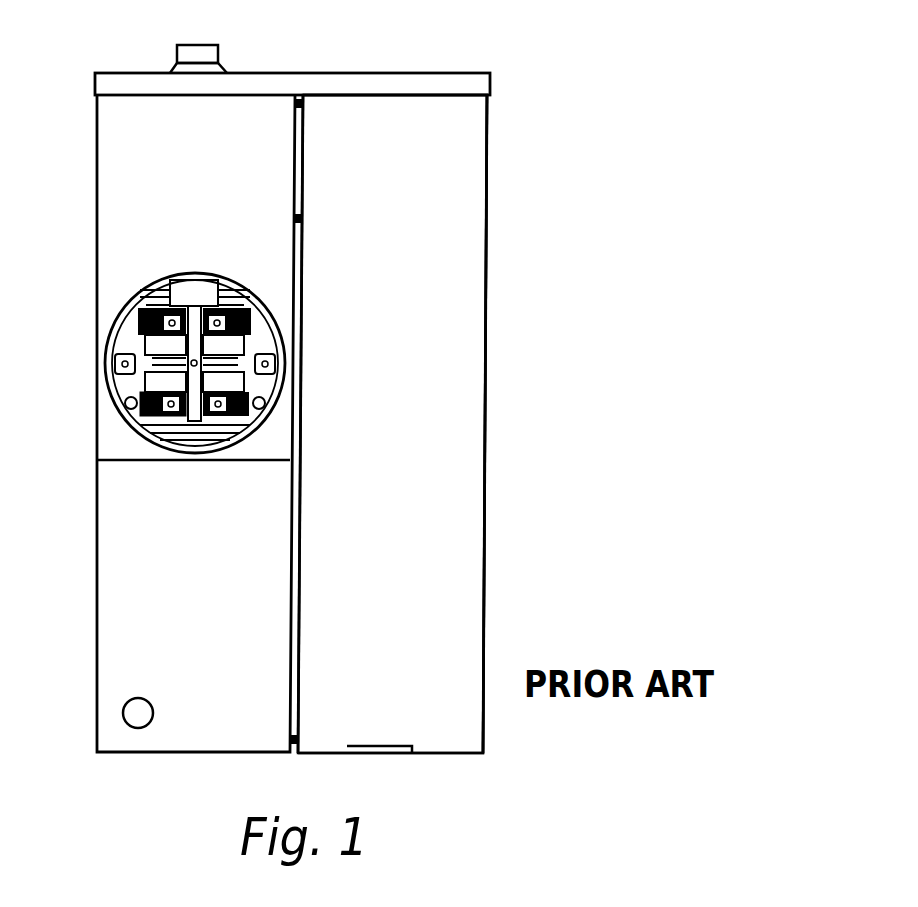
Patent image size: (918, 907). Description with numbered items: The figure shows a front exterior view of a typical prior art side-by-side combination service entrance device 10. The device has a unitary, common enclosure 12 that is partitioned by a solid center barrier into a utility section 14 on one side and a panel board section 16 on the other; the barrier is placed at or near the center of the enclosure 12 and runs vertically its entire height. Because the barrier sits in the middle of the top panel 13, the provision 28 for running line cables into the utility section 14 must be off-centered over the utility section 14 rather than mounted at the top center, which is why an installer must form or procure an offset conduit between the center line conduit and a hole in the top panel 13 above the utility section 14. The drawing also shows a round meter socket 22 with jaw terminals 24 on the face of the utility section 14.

The side-by-side combination service entrance device 10 is at (508, 64).
The unitary enclosure 12 is at (485, 165).
The top panel 13 is at (120, 73).
The utility section 14 is at (112, 185).
The panel board section 16 is at (438, 255).
The meter socket 22 is at (118, 326).
The meter jaw terminal 24 is at (120, 388).
The provision for running line cables 28 is at (222, 53).